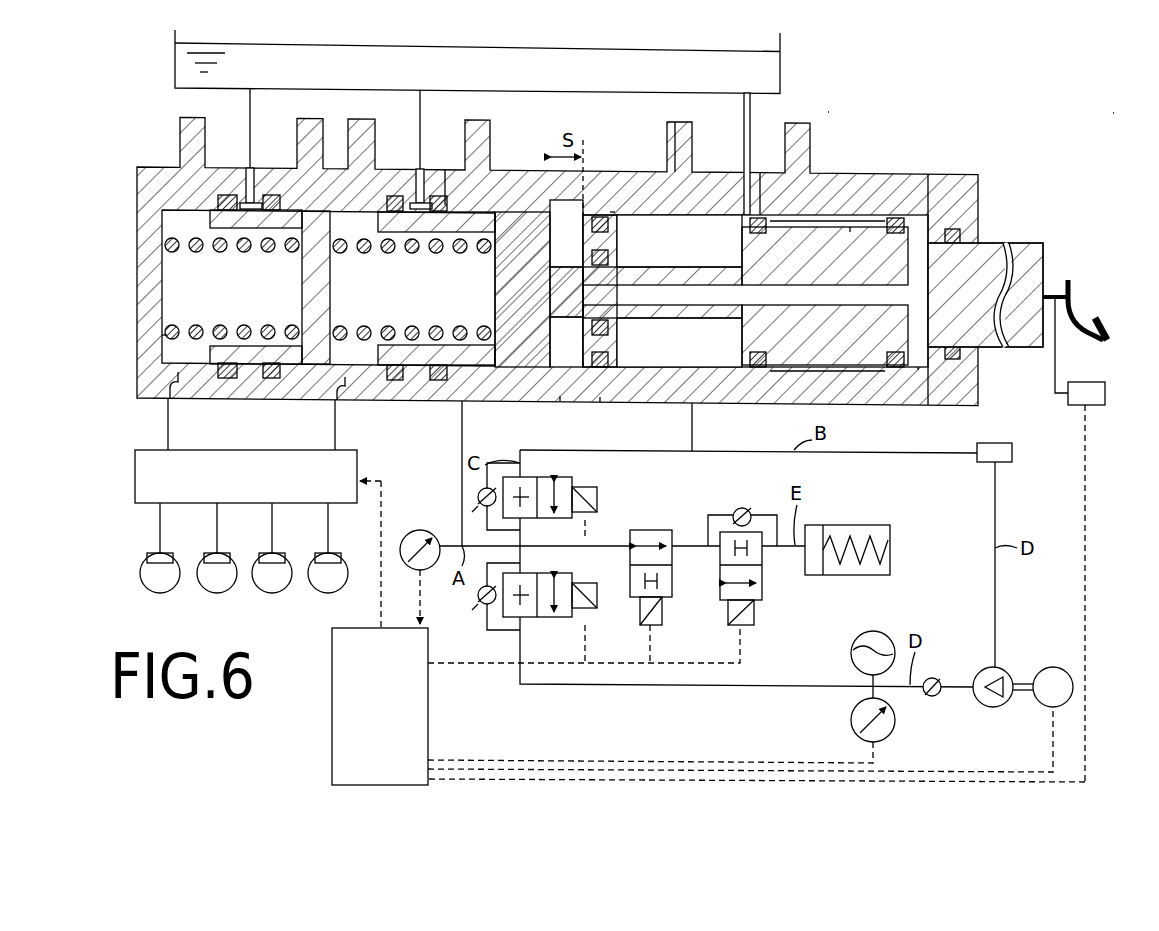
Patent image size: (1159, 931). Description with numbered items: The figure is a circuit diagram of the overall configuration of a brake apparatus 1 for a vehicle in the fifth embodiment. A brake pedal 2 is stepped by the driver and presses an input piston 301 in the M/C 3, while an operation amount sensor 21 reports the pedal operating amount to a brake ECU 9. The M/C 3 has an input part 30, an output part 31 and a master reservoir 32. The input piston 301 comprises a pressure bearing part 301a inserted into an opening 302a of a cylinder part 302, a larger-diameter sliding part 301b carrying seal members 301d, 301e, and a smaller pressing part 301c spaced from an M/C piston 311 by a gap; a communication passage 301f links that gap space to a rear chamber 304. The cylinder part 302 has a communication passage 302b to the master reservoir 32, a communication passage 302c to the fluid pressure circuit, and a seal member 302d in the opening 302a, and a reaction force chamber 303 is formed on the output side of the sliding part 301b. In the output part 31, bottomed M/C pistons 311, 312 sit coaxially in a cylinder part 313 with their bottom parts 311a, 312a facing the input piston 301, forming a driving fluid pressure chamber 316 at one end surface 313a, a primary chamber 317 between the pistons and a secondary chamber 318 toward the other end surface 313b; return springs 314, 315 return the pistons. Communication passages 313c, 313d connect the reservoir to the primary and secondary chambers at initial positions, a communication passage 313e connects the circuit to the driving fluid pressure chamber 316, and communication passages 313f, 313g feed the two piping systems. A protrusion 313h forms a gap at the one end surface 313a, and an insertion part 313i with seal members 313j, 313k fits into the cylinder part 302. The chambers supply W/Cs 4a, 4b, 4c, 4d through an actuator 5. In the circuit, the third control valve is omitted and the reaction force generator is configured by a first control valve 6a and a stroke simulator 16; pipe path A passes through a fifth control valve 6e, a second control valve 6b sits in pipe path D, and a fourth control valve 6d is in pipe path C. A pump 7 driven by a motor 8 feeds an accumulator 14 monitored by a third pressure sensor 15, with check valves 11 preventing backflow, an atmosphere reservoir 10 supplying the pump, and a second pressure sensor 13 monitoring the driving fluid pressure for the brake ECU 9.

The brake apparatus 1 is at (1115, 112).
The brake pedal 2 is at (1108, 314).
The M/C 3 is at (830, 112).
The W/C 4a is at (178, 558).
The W/C 4b is at (234, 558).
The W/C 4c is at (290, 558).
The W/C 4d is at (346, 558).
The actuator for brake fluid pressure control 5 is at (135, 475).
The first control valve 6a is at (765, 590).
The second control valve 6b is at (546, 572).
The fourth control valve 6d is at (546, 475).
The fifth control valve 6e is at (665, 602).
The pump 7 is at (1002, 667).
The motor 8 is at (1052, 667).
The brake ECU 9 is at (332, 652).
The atmosphere reservoir 10 is at (985, 466).
The check valve 11 is at (484, 504).
The second pressure sensor 13 is at (412, 532).
The accumulator 14 is at (882, 638).
The third pressure sensor 15 is at (895, 728).
The stroke simulator 16 is at (854, 525).
The operation amount sensor 21 is at (1105, 394).
The input part 30 is at (920, 173).
The output part 31 is at (160, 155).
The master reservoir 32 is at (780, 60).
The input piston 301 is at (973, 342).
The pressure bearing part 301a is at (1041, 350).
The sliding part 301b is at (850, 227).
The pressing part 301c is at (760, 170).
The seal member 301d is at (797, 222).
The seal member 301e is at (894, 218).
The communication passage 301f is at (918, 370).
The cylinder part 302 is at (963, 182).
The opening 302a is at (995, 243).
The communication passage 302b is at (751, 169).
The communication passage 302c is at (696, 400).
The seal member 302d is at (958, 231).
The reaction force chamber 303 is at (678, 173).
The rear chamber 304 is at (840, 368).
The M/C piston 311 is at (522, 367).
The bottom part 311a is at (575, 370).
The M/C piston 312 is at (319, 368).
The bottom part 312a is at (373, 188).
The cylinder part 313 is at (165, 190).
The one end surface 313a is at (600, 400).
The other end surface 313b is at (165, 336).
The communication passage 313c is at (444, 171).
The communication passage 313d is at (257, 173).
The communication passage 313e is at (462, 403).
The communication passage 313f is at (345, 390).
The communication passage 313g is at (205, 390).
The protrusion 313h is at (560, 400).
The insertion part 313i is at (602, 215).
The seal member 313j is at (583, 173).
The seal member 313k is at (612, 212).
The return spring 314 is at (398, 380).
The return spring 315 is at (234, 378).
The driving fluid pressure chamber 316 is at (585, 367).
The primary chamber 317 is at (386, 305).
The secondary chamber 318 is at (175, 291).